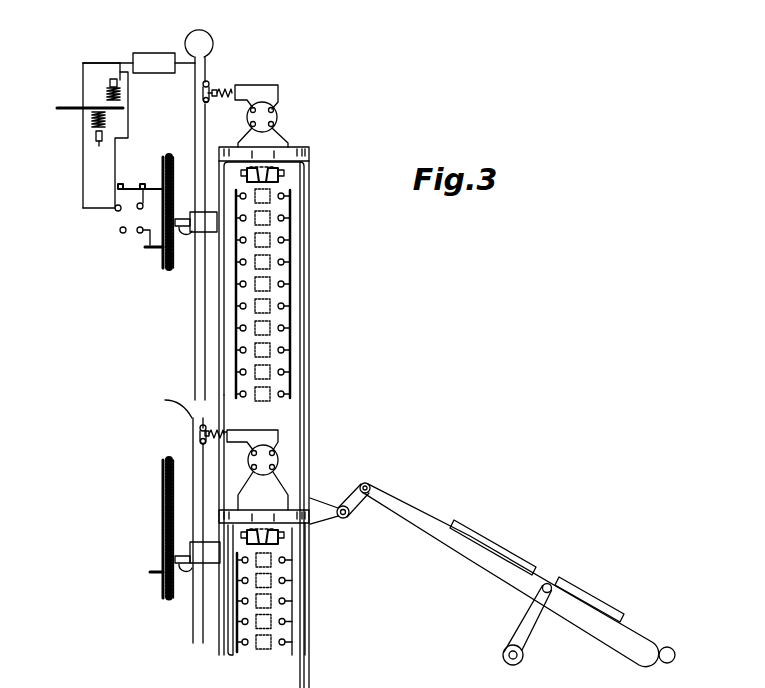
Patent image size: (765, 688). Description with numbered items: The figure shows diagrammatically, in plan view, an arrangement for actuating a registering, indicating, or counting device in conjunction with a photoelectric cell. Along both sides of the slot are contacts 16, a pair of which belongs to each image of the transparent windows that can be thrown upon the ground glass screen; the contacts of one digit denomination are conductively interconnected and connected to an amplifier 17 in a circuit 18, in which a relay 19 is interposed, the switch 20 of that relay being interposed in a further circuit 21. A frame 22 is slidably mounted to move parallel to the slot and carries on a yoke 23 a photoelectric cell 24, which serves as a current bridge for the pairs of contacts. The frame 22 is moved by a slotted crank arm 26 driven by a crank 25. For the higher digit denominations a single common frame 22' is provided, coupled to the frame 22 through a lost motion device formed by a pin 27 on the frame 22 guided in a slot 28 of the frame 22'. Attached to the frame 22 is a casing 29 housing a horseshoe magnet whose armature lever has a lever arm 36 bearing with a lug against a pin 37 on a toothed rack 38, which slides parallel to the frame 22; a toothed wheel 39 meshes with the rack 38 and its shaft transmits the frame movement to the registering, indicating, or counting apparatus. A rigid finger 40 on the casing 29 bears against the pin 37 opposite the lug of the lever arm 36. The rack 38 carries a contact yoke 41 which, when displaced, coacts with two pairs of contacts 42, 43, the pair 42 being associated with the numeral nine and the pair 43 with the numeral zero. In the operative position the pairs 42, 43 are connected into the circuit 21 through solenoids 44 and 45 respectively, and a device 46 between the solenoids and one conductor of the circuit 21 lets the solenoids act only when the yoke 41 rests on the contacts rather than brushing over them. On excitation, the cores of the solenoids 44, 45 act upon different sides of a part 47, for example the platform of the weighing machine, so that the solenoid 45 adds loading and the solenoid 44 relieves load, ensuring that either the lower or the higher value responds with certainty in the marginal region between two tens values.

The contacts 16 is at (284, 241).
The amplifier 17 is at (278, 118).
The circuit 18 is at (279, 90).
The relay 19 is at (229, 90).
The switch 20 is at (204, 101).
The circuit 21 is at (184, 324).
The frame 22 is at (280, 424).
The common frame 22' is at (212, 604).
The yoke 23 is at (298, 155).
The photoelectric cell 24 is at (262, 182).
The crank 25 is at (531, 633).
The slotted crank arm 26 is at (510, 562).
The pin 27 is at (300, 553).
The slot 28 is at (310, 635).
The casing 29 is at (204, 212).
The lever arm 36 is at (182, 218).
The pin 37 is at (205, 388).
The toothed rack 38 is at (178, 150).
The toothed wheel 39 is at (166, 262).
The rigid finger 40 is at (187, 236).
The contact yoke 41 is at (131, 189).
The pair of contacts 42 is at (138, 209).
The pair of contacts 43 is at (140, 233).
The solenoid 44 is at (93, 120).
The solenoid 45 is at (105, 86).
The device 46 is at (158, 60).
The part 47 is at (73, 107).